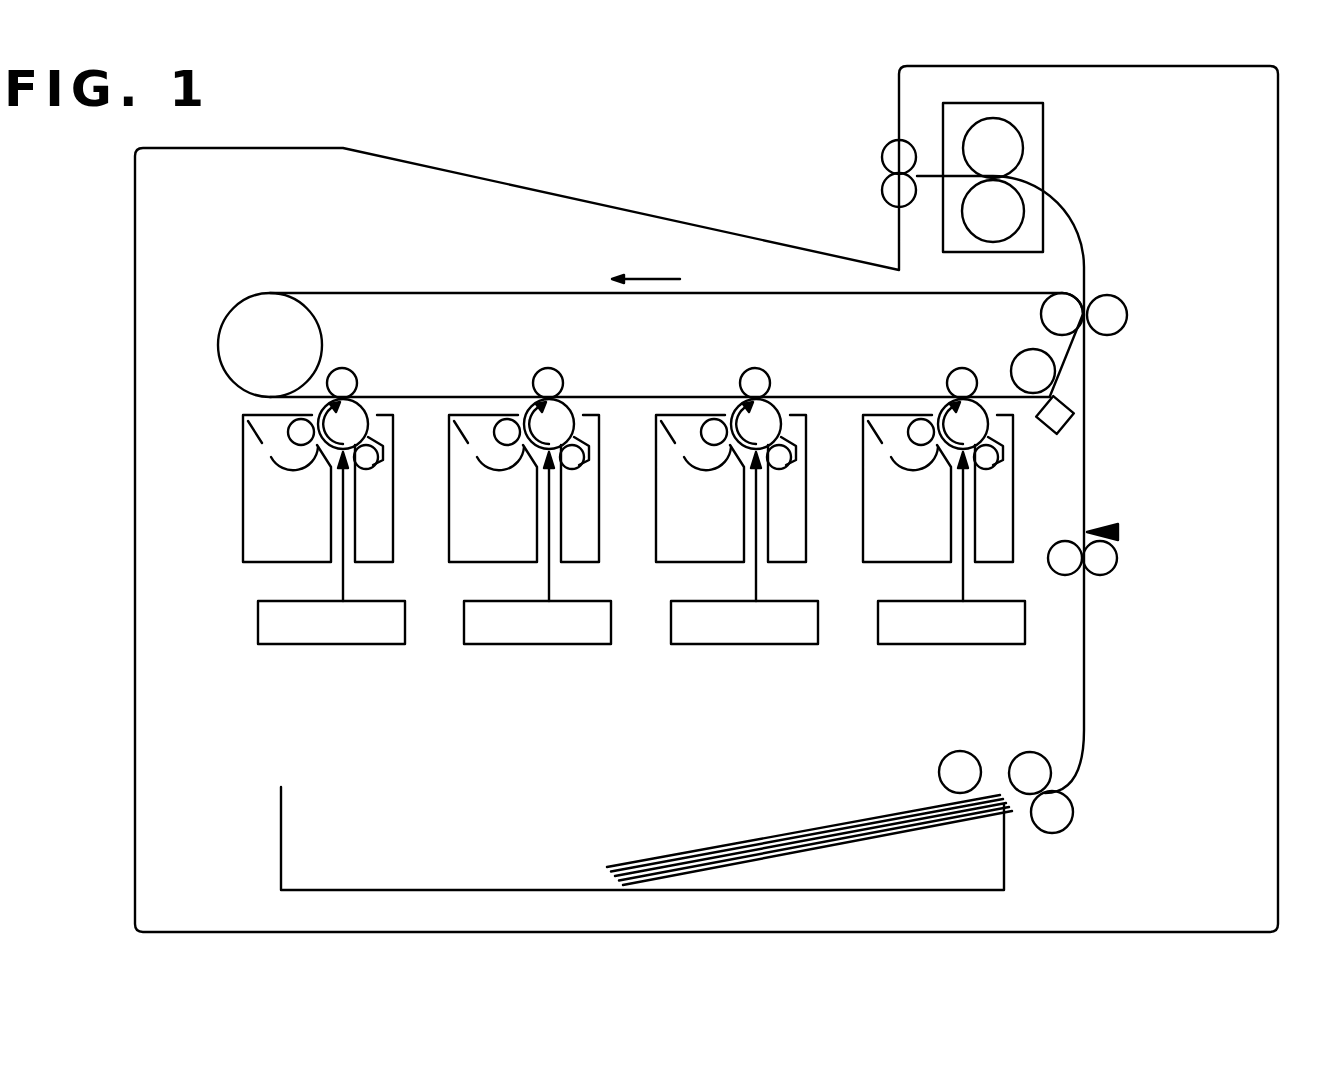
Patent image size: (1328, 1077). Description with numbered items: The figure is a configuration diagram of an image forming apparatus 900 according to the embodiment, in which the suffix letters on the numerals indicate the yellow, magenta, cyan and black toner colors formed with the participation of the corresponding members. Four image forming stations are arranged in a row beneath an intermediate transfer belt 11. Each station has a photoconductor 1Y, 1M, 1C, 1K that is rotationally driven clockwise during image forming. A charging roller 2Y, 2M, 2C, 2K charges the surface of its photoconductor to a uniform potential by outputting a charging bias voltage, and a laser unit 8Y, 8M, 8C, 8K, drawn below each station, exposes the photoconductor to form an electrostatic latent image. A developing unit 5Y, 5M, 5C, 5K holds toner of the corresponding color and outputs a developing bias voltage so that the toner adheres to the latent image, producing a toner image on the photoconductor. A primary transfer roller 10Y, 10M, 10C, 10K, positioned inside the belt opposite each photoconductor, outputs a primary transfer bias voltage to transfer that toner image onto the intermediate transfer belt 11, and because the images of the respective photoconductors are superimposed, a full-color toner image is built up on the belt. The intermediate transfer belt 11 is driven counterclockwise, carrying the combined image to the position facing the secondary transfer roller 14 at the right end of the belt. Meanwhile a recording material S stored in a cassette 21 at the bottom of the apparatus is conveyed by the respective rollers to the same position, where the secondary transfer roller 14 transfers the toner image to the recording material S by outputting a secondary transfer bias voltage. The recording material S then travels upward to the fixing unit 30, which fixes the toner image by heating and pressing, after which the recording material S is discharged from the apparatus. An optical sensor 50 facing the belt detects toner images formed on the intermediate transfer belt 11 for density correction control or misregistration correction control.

The image forming apparatus 900 is at (1278, 120).
The fixing unit 30 is at (1043, 162).
The secondary transfer roller 14 is at (1107, 294).
The optical sensor 50 is at (1067, 407).
The intermediate transfer belt 11 is at (466, 291).
The primary transfer roller 10Y is at (345, 368).
The primary transfer roller 10M is at (574, 340).
The primary transfer roller 10C is at (781, 340).
The primary transfer roller 10K is at (988, 340).
The photoconductor 1Y is at (363, 407).
The photoconductor 1M is at (567, 406).
The photoconductor 1C is at (782, 397).
The photoconductor 1K is at (945, 407).
The charging roller 2Y is at (373, 467).
The charging roller 2M is at (579, 467).
The charging roller 2C is at (786, 467).
The charging roller 2K is at (991, 467).
The developing unit 5Y is at (250, 562).
The developing unit 5M is at (478, 562).
The developing unit 5C is at (688, 562).
The developing unit 5K is at (896, 562).
The laser unit 8Y is at (278, 644).
The laser unit 8M is at (478, 644).
The laser unit 8C is at (693, 644).
The laser unit 8K is at (896, 644).
The recording material S is at (690, 850).
The cassette 21 is at (1004, 860).